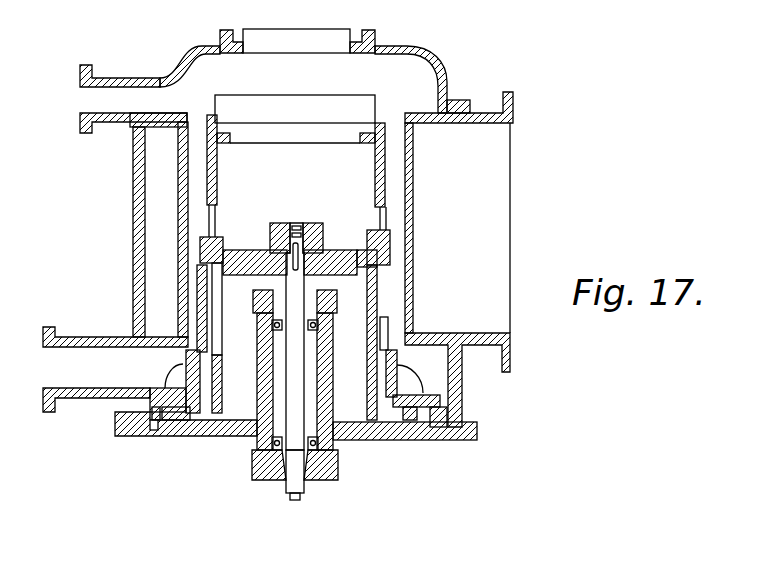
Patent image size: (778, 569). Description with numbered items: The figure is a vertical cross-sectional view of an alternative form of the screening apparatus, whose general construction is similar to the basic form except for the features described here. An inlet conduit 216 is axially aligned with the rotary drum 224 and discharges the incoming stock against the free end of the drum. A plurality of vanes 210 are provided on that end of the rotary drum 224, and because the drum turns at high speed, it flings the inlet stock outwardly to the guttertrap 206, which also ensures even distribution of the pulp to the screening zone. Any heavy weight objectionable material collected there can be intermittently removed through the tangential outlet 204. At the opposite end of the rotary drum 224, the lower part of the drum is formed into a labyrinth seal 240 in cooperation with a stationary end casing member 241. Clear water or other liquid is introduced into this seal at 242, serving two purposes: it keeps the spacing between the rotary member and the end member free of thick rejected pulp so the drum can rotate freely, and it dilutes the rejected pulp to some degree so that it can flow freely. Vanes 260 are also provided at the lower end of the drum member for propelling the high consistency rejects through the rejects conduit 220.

The tangential outlet 204 is at (117, 78).
The guttertrap 206 is at (447, 74).
The vanes 210 is at (340, 107).
The inlet conduit 216 is at (260, 32).
The rejects conduit 220 is at (97, 313).
The rotary drum 224 is at (380, 225).
The labyrinth seal 240 is at (168, 437).
The stationary end casing member 241 is at (195, 437).
The liquid introduction point 242 is at (150, 437).
The vanes 260 is at (180, 372).